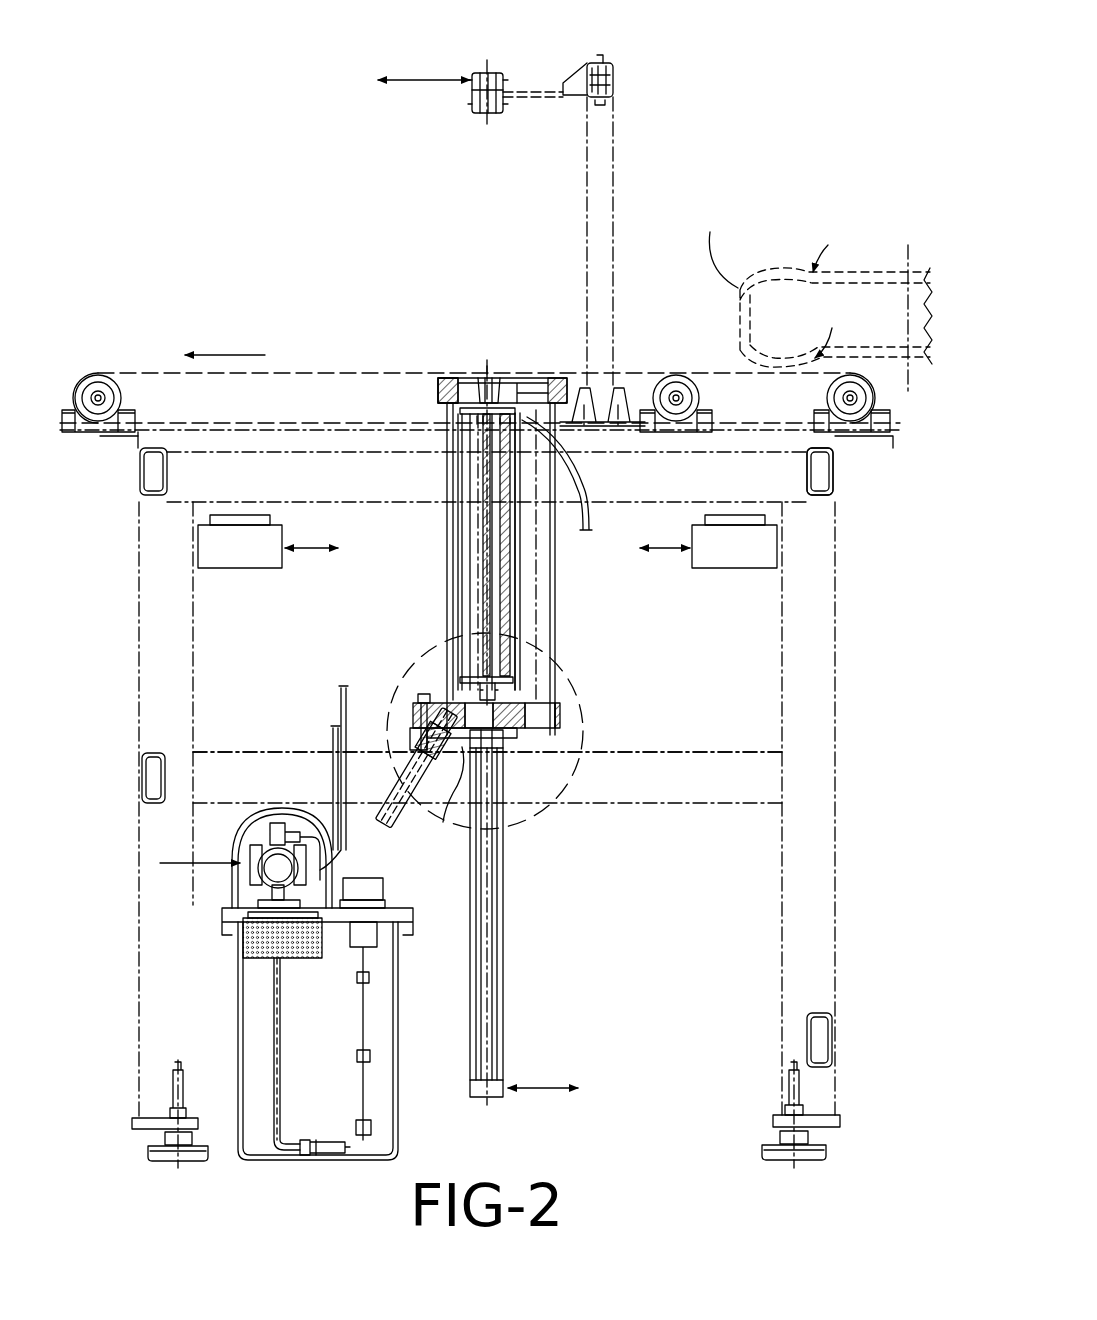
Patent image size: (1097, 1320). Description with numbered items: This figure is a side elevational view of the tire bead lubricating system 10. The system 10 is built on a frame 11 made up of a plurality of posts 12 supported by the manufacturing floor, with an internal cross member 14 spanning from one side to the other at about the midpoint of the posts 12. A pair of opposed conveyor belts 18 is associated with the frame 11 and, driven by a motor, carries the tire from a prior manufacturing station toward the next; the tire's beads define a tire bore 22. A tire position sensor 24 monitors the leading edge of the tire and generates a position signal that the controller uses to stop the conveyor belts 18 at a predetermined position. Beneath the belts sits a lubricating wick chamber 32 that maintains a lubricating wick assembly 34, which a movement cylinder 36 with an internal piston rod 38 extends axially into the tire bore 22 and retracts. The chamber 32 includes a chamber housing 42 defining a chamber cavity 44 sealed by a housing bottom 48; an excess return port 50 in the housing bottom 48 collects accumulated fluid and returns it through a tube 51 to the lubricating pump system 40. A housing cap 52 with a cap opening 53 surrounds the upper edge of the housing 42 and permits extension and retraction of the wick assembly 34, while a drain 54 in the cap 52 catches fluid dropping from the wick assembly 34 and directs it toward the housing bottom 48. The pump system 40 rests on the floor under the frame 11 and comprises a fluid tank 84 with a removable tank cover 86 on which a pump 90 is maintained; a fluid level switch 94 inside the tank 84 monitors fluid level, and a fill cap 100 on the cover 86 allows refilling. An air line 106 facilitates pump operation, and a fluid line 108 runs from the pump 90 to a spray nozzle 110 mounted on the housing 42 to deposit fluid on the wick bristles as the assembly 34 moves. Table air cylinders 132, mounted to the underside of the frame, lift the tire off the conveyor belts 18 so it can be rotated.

The tire bead lubricating system 10 is at (222, 145).
The frame 11 is at (842, 498).
The posts 12 is at (165, 625).
The internal cross member 14 is at (690, 775).
The conveyor belts 18 is at (150, 372).
The tire bore 22 is at (870, 268).
The tire position sensor 24 is at (498, 88).
The lubricating wick chamber 32 is at (555, 640).
The lubricating wick assembly 34 is at (495, 382).
The movement cylinder 36 is at (505, 915).
The piston rod 38 is at (478, 690).
The lubricating pump system 40 is at (276, 959).
The chamber housing 42 is at (553, 605).
The chamber cavity 44 is at (458, 600).
The housing bottom 48 is at (510, 695).
The excess return port 50 is at (445, 782).
The tube 51 is at (400, 820).
The housing cap 52 is at (440, 385).
The cap opening 53 is at (465, 382).
The drain 54 is at (540, 380).
The fluid tank 84 is at (395, 1125).
The tank cover 86 is at (412, 920).
The pump 90 is at (262, 855).
The fluid level switch 94 is at (368, 1052).
The fill cap 100 is at (372, 888).
The air line 106 is at (341, 705).
The fluid line 108 is at (585, 492).
The spray nozzle 110 is at (540, 425).
The table air cylinder 132 is at (228, 548).